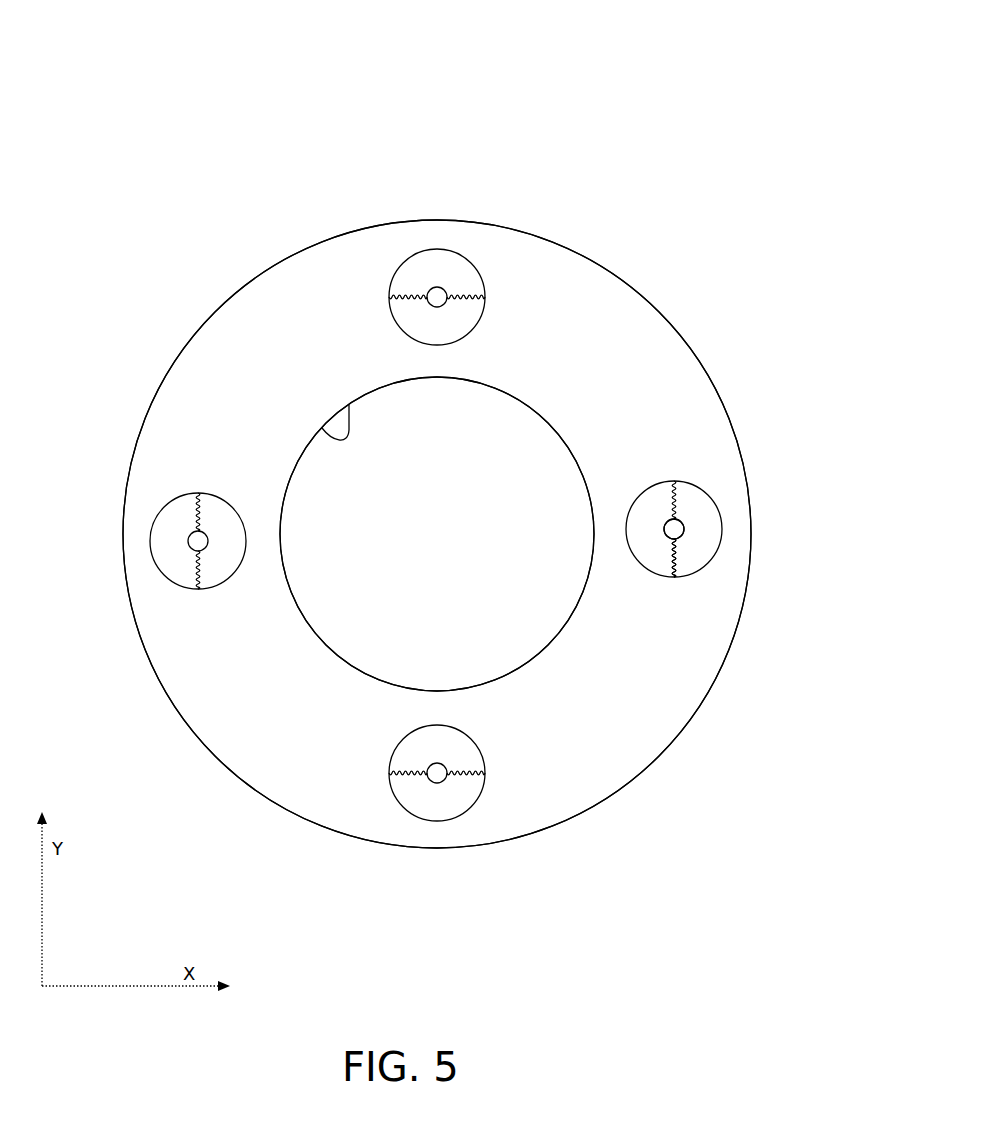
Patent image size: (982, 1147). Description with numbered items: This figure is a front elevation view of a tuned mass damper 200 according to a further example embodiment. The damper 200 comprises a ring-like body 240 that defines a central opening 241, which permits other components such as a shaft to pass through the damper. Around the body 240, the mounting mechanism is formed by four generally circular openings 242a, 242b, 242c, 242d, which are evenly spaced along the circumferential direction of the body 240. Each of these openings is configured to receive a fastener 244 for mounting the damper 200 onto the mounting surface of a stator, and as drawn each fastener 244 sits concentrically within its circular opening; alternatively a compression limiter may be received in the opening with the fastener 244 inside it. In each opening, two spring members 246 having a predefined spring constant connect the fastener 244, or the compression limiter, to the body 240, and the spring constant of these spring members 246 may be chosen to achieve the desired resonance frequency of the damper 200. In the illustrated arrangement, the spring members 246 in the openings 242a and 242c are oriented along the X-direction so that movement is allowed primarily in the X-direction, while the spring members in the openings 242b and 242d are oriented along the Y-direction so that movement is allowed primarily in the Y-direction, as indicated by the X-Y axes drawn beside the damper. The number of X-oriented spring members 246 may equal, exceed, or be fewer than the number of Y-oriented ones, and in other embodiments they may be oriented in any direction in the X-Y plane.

The tuned mass damper 200 is at (730, 107).
The body 240 is at (655, 333).
The central opening 241 is at (322, 428).
The circular opening 242a is at (444, 249).
The circular opening 242b is at (683, 481).
The circular opening 242c is at (483, 787).
The circular opening 242d is at (167, 578).
The fastener 244 is at (683, 521).
The spring member 246 is at (683, 541).